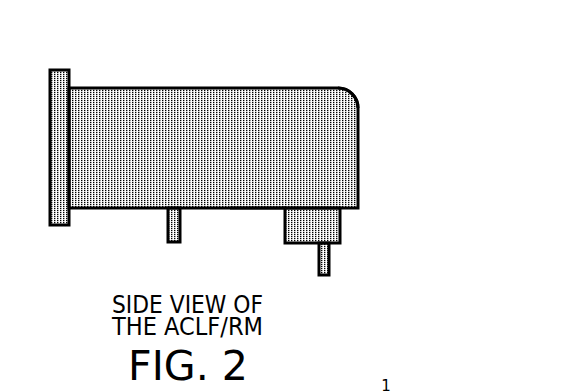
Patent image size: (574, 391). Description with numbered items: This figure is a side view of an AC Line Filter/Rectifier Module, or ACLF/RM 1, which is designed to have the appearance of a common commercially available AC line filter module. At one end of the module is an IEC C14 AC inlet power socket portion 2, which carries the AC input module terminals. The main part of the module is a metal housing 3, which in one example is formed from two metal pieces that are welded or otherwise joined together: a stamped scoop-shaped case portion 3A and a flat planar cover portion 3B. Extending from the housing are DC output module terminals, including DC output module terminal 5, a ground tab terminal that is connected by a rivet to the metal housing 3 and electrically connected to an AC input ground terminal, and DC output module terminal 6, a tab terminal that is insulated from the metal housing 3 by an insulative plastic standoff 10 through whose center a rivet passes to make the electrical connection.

The AC Line Filter/Rectifier Module (ACLF/RM) 1 is at (370, 51).
The AC inlet power socket portion 2 is at (62, 70).
The metal housing 3 is at (193, 88).
The scoop-shaped case portion 3A is at (283, 88).
The flat planar cover portion 3B is at (255, 208).
The DC output module terminal 5 is at (174, 242).
The DC output module terminal 6 is at (324, 275).
The insulative plastic standoff 10 is at (340, 226).